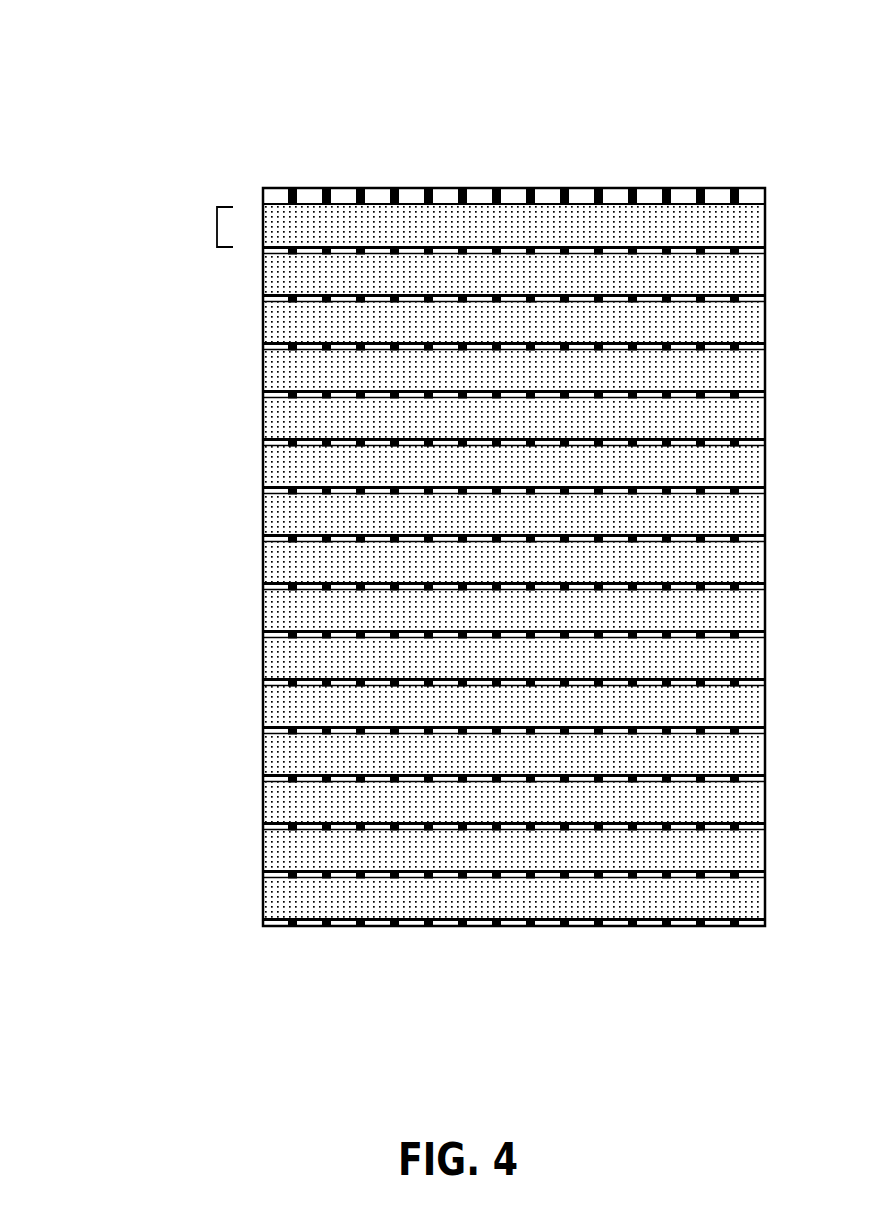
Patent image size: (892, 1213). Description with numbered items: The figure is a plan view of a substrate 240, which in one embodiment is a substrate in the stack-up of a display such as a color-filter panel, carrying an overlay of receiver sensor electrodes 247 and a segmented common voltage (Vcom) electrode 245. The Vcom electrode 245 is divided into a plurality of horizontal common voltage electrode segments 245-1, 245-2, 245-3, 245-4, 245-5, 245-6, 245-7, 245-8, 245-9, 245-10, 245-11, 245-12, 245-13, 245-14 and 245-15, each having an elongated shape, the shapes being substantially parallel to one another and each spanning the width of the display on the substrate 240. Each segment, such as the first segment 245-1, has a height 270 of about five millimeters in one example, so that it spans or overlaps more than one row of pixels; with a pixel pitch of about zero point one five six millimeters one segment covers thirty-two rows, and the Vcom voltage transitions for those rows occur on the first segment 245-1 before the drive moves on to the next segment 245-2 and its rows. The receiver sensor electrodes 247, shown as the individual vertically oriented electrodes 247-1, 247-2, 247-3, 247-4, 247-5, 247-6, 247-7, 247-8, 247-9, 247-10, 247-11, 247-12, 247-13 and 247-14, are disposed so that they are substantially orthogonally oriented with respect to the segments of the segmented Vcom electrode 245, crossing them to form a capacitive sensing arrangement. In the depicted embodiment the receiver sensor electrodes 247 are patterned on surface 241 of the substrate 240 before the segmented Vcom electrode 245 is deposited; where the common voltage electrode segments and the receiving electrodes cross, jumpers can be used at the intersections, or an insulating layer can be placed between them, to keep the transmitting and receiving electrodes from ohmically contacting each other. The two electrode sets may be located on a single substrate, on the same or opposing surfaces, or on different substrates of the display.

The substrate 240 is at (263, 188).
The surface 241 is at (747, 198).
The segmented common voltage (Vcom) electrode 245 is at (162, 923).
The common voltage electrode segment 245-1 is at (262, 232).
The common voltage electrode segment 245-2 is at (263, 280).
The common voltage electrode segment 245-3 is at (263, 321).
The common voltage electrode segment 245-4 is at (263, 369).
The common voltage electrode segment 245-5 is at (263, 417).
The common voltage electrode segment 245-6 is at (263, 465).
The common voltage electrode segment 245-7 is at (263, 513).
The common voltage electrode segment 245-8 is at (263, 561).
The common voltage electrode segment 245-9 is at (263, 609).
The common voltage electrode segment 245-10 is at (263, 657).
The common voltage electrode segment 245-11 is at (263, 705).
The common voltage electrode segment 245-12 is at (263, 753).
The common voltage electrode segment 245-13 is at (263, 801).
The common voltage electrode segment 245-14 is at (263, 849).
The common voltage electrode segment 245-15 is at (263, 897).
The receiver sensor electrodes 247 is at (255, 72).
The receiver sensor electrode 247-1 is at (292, 188).
The receiver sensor electrode 247-2 is at (324, 927).
The receiver sensor electrode 247-3 is at (362, 188).
The receiver sensor electrode 247-4 is at (392, 927).
The receiver sensor electrode 247-5 is at (430, 188).
The receiver sensor electrode 247-6 is at (461, 927).
The receiver sensor electrode 247-7 is at (498, 188).
The receiver sensor electrode 247-8 is at (528, 927).
The receiver sensor electrode 247-9 is at (566, 188).
The receiver sensor electrode 247-10 is at (597, 927).
The receiver sensor electrode 247-11 is at (634, 188).
The receiver sensor electrode 247-12 is at (664, 927).
The receiver sensor electrode 247-13 is at (701, 188).
The receiver sensor electrode 247-14 is at (734, 927).
The height 270 is at (217, 225).